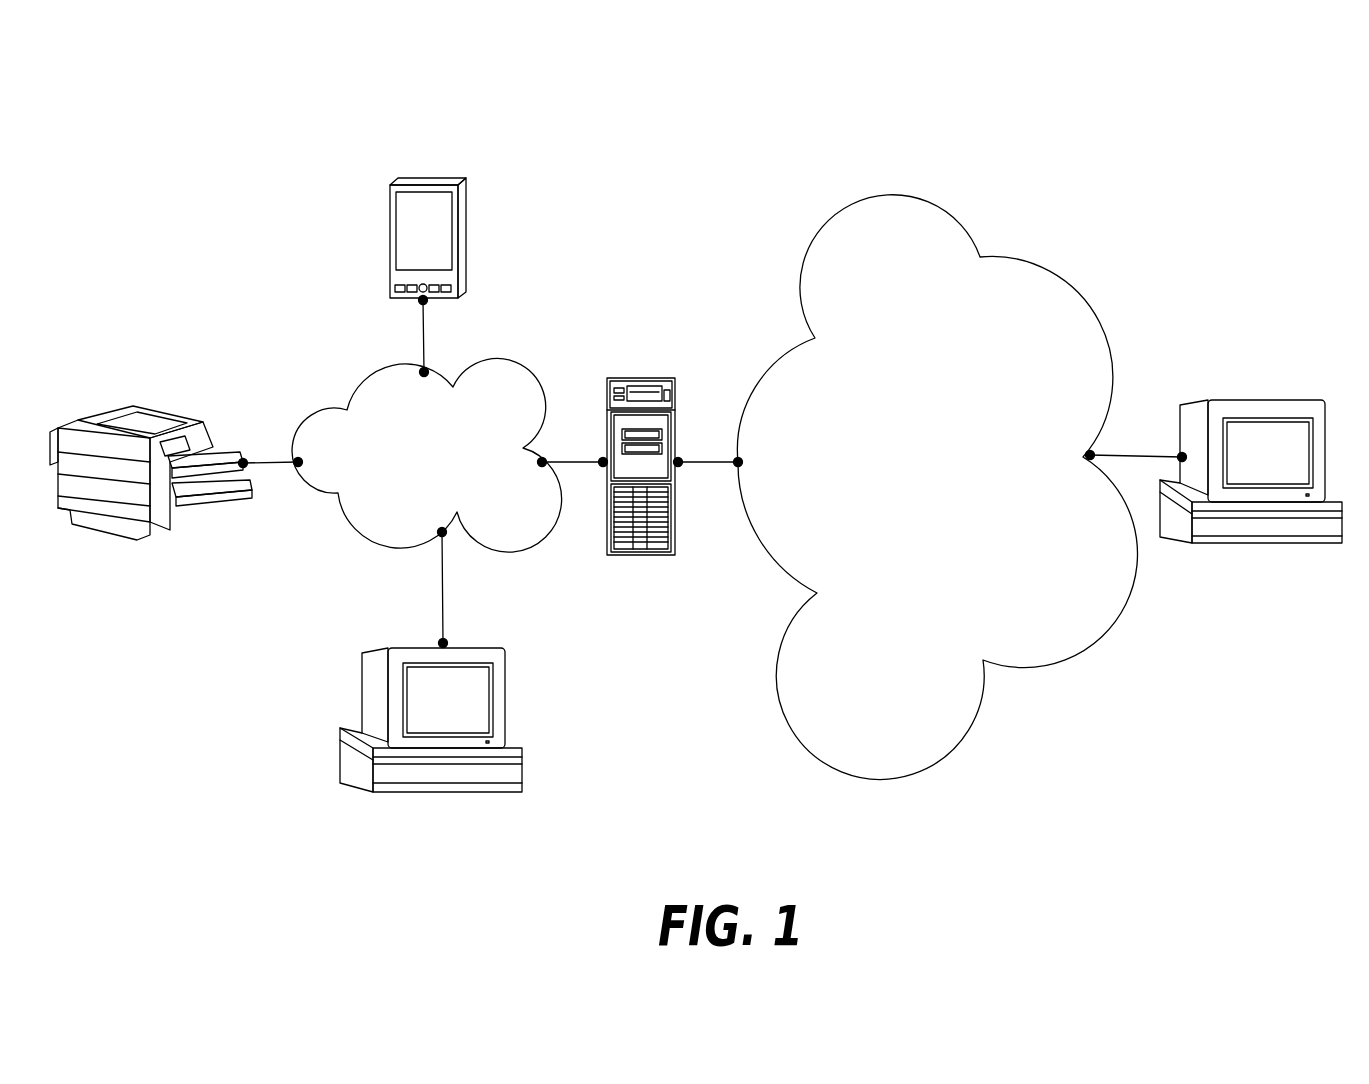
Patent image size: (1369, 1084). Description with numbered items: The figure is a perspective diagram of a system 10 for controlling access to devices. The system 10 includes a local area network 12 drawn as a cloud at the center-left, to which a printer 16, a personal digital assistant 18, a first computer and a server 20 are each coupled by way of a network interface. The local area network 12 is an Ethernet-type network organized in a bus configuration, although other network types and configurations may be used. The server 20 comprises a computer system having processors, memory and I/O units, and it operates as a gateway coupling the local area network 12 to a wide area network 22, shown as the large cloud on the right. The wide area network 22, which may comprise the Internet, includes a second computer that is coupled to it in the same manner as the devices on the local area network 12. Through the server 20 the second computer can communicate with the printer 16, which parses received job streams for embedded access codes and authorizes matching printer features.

The system 10 is at (1210, 162).
The local area network 12 is at (507, 383).
The printer 16 is at (162, 416).
The personal digital assistant 18 is at (442, 180).
The server 20 is at (637, 380).
The wide area network 22 is at (932, 200).